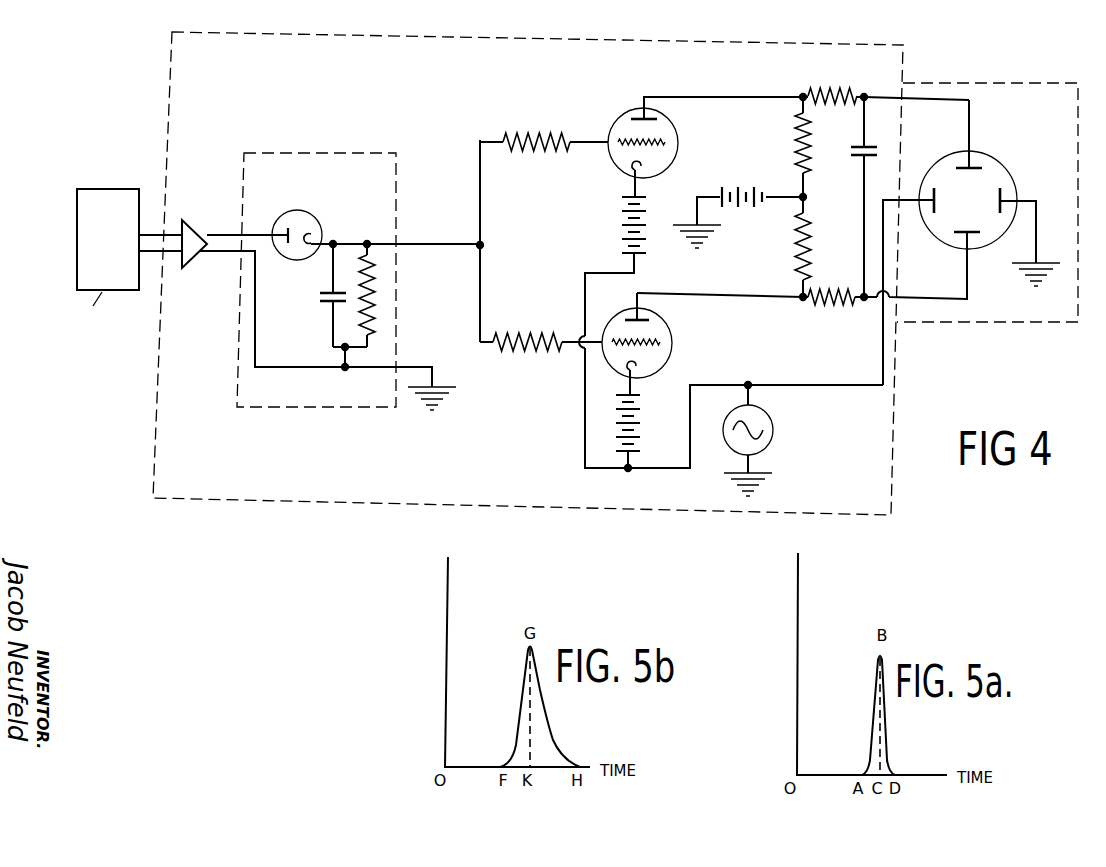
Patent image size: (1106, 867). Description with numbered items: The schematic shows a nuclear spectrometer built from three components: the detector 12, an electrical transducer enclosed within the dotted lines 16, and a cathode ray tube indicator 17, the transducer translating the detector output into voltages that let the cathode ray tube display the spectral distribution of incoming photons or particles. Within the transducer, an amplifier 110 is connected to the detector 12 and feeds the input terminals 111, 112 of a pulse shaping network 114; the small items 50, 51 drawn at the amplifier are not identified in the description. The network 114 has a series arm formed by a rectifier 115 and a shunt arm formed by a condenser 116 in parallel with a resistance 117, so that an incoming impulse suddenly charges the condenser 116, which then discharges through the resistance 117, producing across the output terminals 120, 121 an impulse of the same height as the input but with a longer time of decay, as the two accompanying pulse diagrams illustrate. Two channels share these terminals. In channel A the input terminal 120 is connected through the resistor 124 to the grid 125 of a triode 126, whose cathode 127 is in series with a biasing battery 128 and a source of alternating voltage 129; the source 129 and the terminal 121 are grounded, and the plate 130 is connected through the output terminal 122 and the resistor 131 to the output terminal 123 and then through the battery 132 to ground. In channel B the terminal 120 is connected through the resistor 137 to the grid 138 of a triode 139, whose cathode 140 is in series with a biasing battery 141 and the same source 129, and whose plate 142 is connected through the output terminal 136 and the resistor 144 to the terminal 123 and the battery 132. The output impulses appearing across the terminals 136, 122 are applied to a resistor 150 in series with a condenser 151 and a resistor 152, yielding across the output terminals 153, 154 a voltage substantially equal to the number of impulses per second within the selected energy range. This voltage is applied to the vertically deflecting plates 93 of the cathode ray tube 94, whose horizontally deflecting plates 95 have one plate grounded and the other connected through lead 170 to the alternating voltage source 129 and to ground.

The detector 12 is at (108, 188).
The electrical transducer 16 is at (168, 86).
The cathode ray tube indicator 17 is at (995, 81).
The amplifier 50 is at (171, 231).
The amplifier input connection 51 is at (170, 257).
The vertically deflecting plates 93 is at (967, 229).
The cathode ray tube 94 is at (937, 241).
The horizontally deflecting plates 95 is at (982, 169).
The amplifier 110 is at (203, 231).
The input terminal 111 is at (232, 230).
The input terminal 112 is at (227, 254).
The pulse shaping network 114 is at (300, 152).
The rectifier 115 is at (315, 225).
The condenser 116 is at (322, 301).
The resistance 117 is at (375, 283).
The output terminal 120 is at (405, 240).
The output terminal 121 is at (406, 368).
The output terminal 122 is at (800, 93).
The output terminal 123 is at (805, 199).
The resistor 124 is at (540, 130).
The grid 125 is at (630, 140).
The triode 126 is at (658, 127).
The cathode 127 is at (650, 166).
The biasing battery 128 is at (622, 232).
The source of alternating voltage 129 is at (773, 437).
The plate 130 is at (638, 115).
The resistor 131 is at (797, 158).
The battery 132 is at (725, 190).
The output terminal 136 is at (797, 300).
The resistor 137 is at (523, 353).
The grid 138 is at (620, 335).
The triode 139 is at (612, 358).
The cathode 140 is at (643, 371).
The biasing battery 141 is at (612, 414).
The plate 142 is at (648, 322).
The resistor 144 is at (792, 229).
The resistor 150 is at (838, 92).
The condenser 151 is at (851, 159).
The resistor 152 is at (830, 305).
The output terminal 153 is at (868, 93).
The output terminal 154 is at (862, 302).
The lead 170 is at (853, 390).